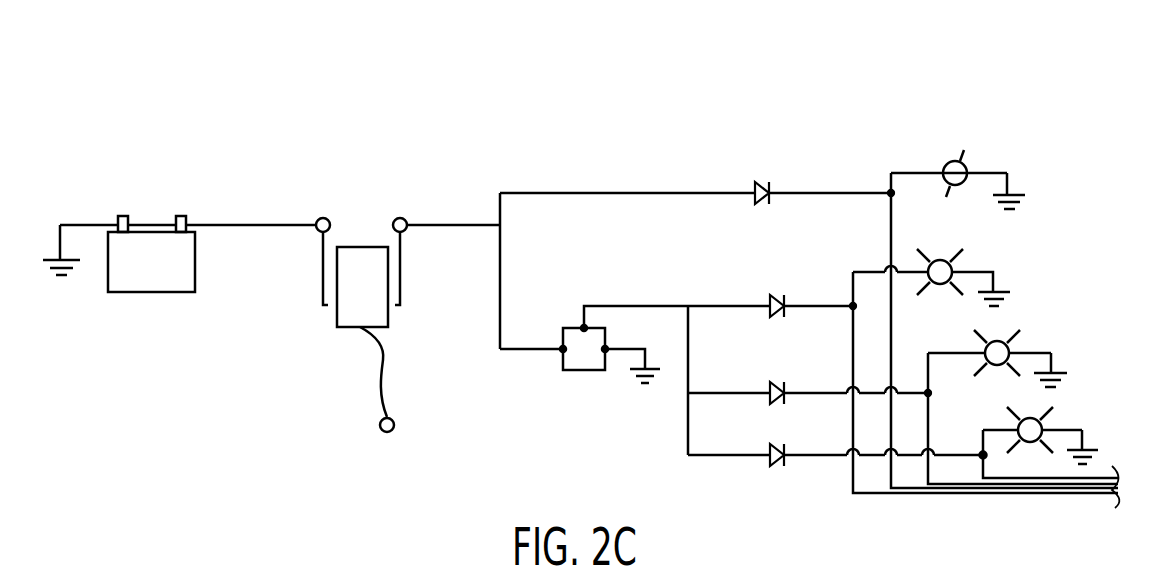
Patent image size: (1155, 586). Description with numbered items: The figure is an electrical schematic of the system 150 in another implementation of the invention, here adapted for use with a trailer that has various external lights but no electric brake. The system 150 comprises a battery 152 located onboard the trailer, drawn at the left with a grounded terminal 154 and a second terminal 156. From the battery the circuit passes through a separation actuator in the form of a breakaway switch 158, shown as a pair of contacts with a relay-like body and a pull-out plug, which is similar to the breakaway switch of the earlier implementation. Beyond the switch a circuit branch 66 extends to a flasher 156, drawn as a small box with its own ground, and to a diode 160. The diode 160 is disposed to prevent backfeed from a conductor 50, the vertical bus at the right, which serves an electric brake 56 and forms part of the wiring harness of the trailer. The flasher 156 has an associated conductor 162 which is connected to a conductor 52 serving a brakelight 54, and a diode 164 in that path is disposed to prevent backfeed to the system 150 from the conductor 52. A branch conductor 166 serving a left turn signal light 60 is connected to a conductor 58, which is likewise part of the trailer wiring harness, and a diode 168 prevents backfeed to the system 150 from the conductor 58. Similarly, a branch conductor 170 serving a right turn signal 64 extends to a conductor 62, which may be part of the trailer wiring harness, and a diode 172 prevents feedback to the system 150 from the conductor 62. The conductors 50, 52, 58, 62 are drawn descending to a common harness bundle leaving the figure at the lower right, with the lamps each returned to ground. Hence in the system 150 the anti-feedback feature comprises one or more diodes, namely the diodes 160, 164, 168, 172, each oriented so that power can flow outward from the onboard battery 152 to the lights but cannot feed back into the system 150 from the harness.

The system 150 is at (698, 46).
The battery 152 is at (152, 292).
The grounded terminal 154 is at (111, 208).
The second terminal / flasher 156 is at (173, 206).
The breakaway switch 158 is at (359, 209).
The circuit branch 66 is at (464, 222).
The diode 160 is at (756, 185).
The conductor 162 is at (668, 305).
The diode 164 is at (782, 292).
The branch conductor 166 is at (742, 394).
The diode 168 is at (774, 386).
The branch conductor 170 is at (814, 460).
The diode 172 is at (780, 446).
The conductor 50 is at (889, 172).
The conductor 52 is at (853, 490).
The brakelight 54 is at (955, 268).
The electric brake 56 is at (968, 162).
The conductor 58 is at (893, 472).
The left turn signal light 60 is at (1000, 367).
The conductor 62 is at (928, 472).
The right turn signal 64 is at (1042, 424).